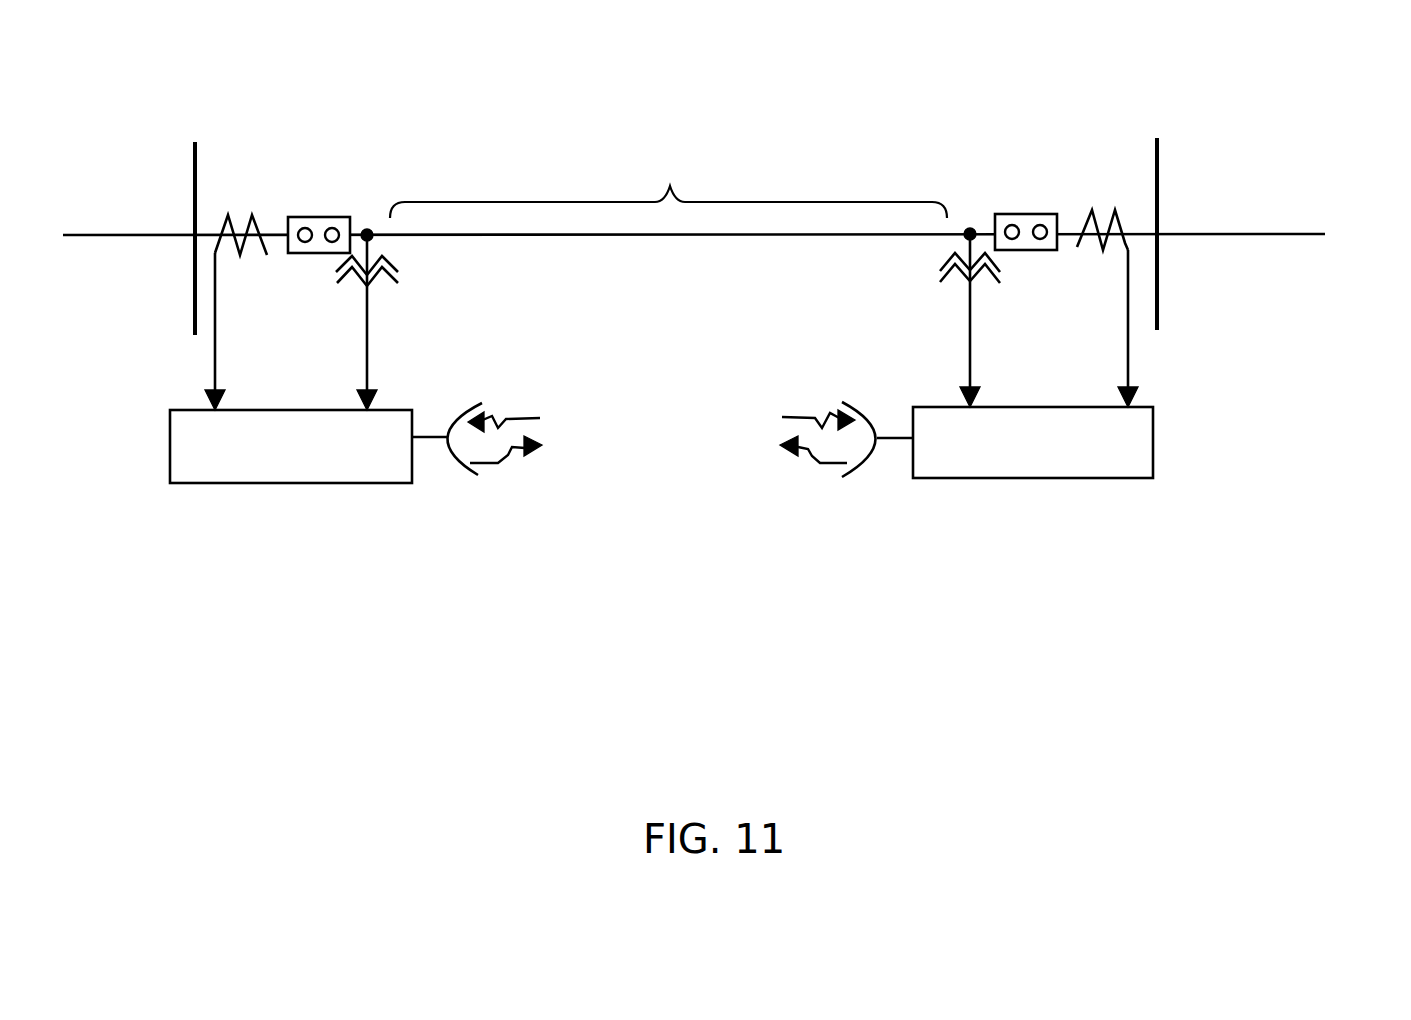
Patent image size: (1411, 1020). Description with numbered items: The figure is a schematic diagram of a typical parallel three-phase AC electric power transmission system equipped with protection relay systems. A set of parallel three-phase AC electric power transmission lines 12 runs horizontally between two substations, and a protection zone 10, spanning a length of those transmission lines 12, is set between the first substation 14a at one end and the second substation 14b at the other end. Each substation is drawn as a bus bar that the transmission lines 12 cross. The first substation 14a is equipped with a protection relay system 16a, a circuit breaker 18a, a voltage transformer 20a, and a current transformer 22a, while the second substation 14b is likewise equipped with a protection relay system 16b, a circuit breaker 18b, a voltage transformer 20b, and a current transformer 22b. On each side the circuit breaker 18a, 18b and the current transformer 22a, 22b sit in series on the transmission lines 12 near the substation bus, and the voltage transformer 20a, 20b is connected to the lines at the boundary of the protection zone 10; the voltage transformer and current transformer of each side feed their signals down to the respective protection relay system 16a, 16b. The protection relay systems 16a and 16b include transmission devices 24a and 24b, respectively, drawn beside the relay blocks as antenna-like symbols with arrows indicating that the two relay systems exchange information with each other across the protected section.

The protection zone 10 is at (668, 179).
The parallel three-phase AC electric power transmission lines 12 is at (1293, 233).
The first substation 14a is at (248, 135).
The second substation 14b is at (1188, 162).
The protection relay system 16a is at (248, 483).
The protection relay system 16b is at (1098, 478).
The circuit breaker 18a is at (342, 217).
The circuit breaker 18b is at (1035, 214).
The voltage transformer 20a is at (390, 282).
The voltage transformer 20b is at (940, 278).
The current transformer 22a is at (247, 258).
The current transformer 22b is at (1095, 253).
The transmission device 24a is at (457, 455).
The transmission device 24b is at (858, 463).